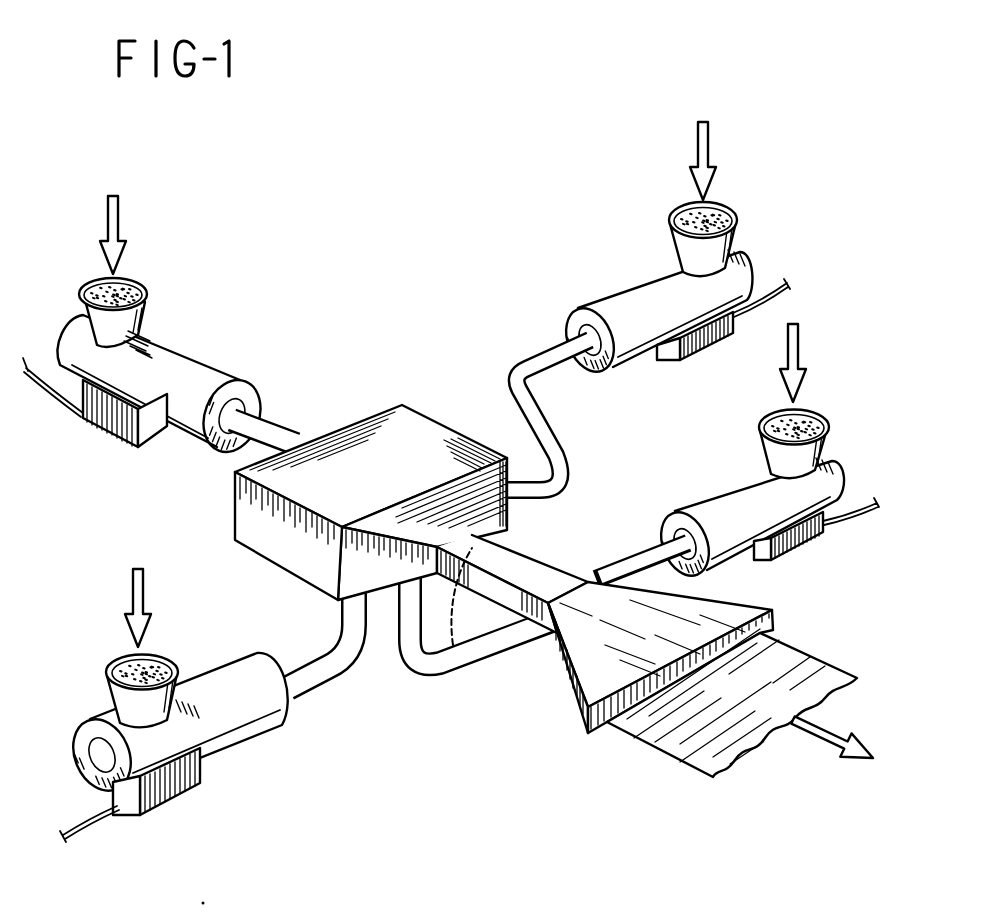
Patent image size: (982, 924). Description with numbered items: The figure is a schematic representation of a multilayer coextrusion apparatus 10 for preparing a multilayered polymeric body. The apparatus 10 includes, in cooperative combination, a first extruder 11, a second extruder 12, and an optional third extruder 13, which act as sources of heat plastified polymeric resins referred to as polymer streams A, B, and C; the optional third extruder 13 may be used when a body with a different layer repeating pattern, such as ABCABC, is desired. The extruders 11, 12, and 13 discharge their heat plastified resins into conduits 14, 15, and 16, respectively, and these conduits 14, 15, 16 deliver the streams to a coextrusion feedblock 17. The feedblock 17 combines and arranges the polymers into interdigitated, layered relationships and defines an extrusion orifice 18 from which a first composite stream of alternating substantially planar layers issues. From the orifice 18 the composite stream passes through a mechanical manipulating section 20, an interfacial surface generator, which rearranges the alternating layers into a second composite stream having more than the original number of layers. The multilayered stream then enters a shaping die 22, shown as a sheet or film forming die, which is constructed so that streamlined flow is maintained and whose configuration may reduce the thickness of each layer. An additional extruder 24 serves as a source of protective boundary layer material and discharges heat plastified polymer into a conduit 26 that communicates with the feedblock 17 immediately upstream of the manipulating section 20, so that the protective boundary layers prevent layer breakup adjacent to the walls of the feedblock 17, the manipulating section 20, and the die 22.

The extrusion apparatus 10 is at (377, 286).
The first extruder 11 is at (193, 344).
The second extruder 12 is at (220, 653).
The third extruder 13 is at (730, 485).
The conduit 14 is at (275, 418).
The conduit 15 is at (327, 673).
The conduit 16 is at (503, 640).
The coextrusion feedblock 17 is at (447, 420).
The extrusion orifice 18 is at (453, 645).
The mechanical manipulating section 20 is at (550, 557).
The shaping die 22 is at (577, 697).
The additional extruder 24 is at (607, 293).
The conduit 26 is at (530, 373).